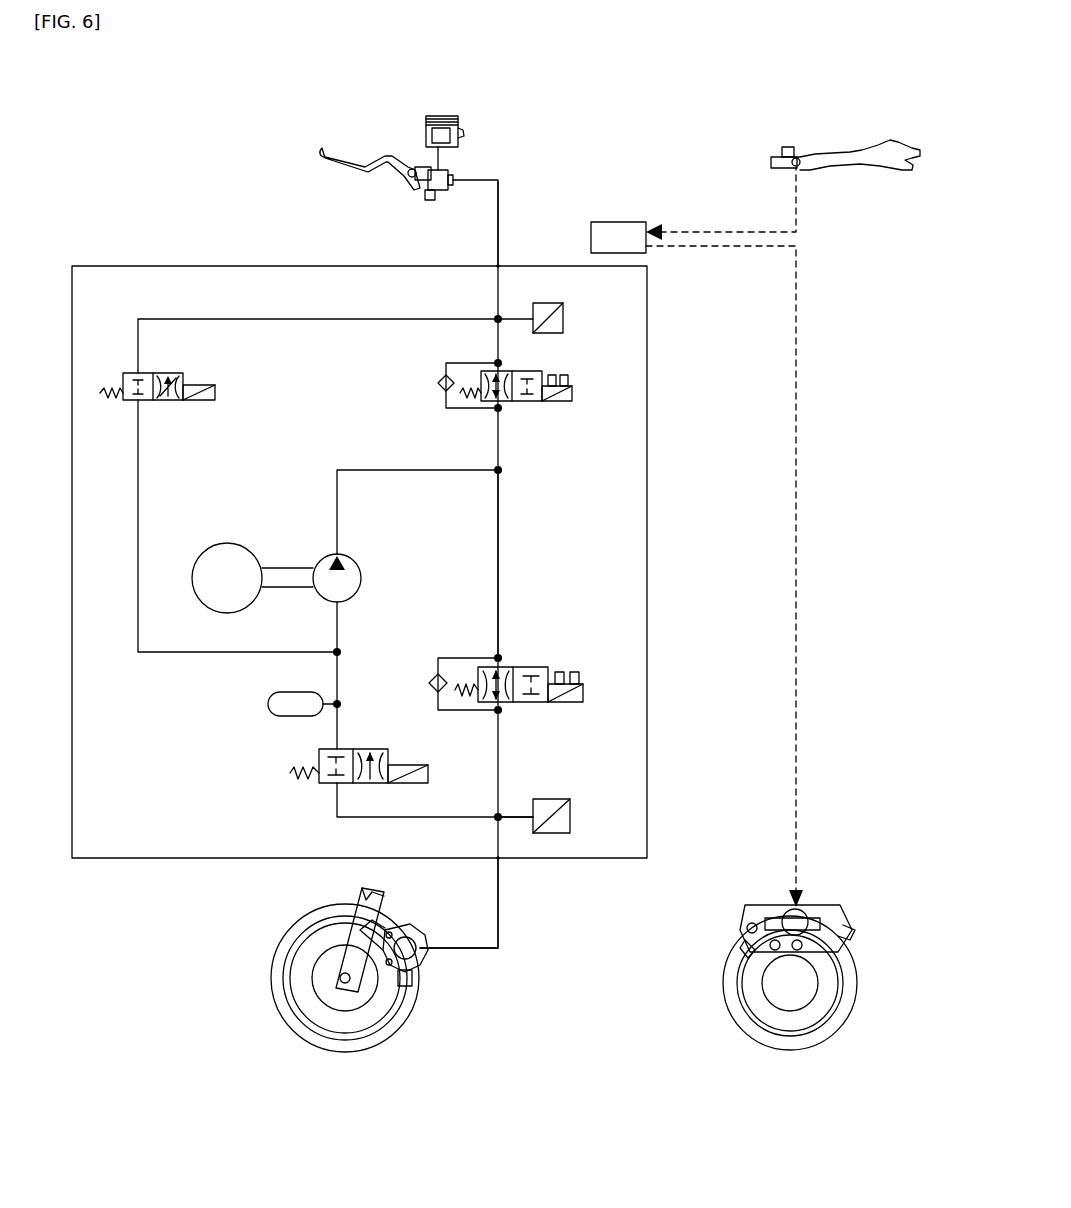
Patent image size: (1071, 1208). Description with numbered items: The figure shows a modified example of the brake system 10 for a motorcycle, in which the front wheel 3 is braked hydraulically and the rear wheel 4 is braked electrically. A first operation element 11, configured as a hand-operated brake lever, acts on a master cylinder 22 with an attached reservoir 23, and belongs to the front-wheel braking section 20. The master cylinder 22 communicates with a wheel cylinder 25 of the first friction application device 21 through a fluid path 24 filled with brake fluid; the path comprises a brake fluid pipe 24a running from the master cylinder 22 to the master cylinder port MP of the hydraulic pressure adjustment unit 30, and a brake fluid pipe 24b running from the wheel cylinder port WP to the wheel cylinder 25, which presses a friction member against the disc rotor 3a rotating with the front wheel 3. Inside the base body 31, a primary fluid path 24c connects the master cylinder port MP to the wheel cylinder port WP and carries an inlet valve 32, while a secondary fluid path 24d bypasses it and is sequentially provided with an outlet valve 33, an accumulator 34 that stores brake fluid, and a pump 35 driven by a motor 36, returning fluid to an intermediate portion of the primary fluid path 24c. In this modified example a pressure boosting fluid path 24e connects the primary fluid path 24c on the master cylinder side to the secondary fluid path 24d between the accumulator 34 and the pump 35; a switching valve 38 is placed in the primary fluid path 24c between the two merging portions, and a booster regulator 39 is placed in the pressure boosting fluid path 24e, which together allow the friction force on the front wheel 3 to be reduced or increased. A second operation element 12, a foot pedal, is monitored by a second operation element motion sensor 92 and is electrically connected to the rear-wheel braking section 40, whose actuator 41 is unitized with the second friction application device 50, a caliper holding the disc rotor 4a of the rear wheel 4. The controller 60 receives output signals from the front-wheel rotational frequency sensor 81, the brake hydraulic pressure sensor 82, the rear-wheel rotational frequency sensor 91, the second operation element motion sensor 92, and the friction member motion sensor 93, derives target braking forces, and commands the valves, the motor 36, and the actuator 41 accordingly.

The brake system 10 is at (240, 105).
The first operation element 11 is at (345, 149).
The second operation element 12 is at (880, 150).
The front-wheel braking section 20 is at (223, 182).
The first friction application device 21 is at (415, 975).
The master cylinder 22 is at (440, 193).
The reservoir 23 is at (470, 118).
The fluid path 24 is at (525, 175).
The brake fluid pipe 24a is at (499, 222).
The brake fluid pipe 24b is at (499, 922).
The primary fluid path 24c is at (499, 522).
The secondary fluid path 24d is at (336, 490).
The pressure boosting fluid path 24e is at (182, 655).
The wheel cylinder 25 is at (408, 944).
The hydraulic pressure adjustment unit 30 is at (140, 246).
The base body 31 is at (231, 265).
The inlet valve 32 is at (537, 703).
The outlet valve 33 is at (326, 785).
The accumulator 34 is at (286, 717).
The pump 35 is at (319, 560).
The motor 36 is at (206, 549).
The switching valve 38 is at (536, 403).
The booster regulator 39 is at (172, 403).
The rear-wheel braking section 40 is at (852, 776).
The actuator 41 is at (786, 910).
The second friction application device 50 is at (748, 908).
The controller 60 is at (630, 213).
The front-wheel rotational frequency sensor 81 is at (408, 988).
The brake hydraulic pressure sensor 82 is at (562, 333).
The rear-wheel rotational frequency sensor 91 is at (742, 946).
The second operation element motion sensor 92 is at (791, 146).
The friction member motion sensor 93 is at (822, 912).
The front wheel 3 is at (255, 1000).
The disc rotor 3a is at (288, 946).
The rear wheel 4 is at (870, 994).
The disc rotor 4a is at (852, 956).
The master cylinder port MP is at (499, 265).
The wheel cylinder port WP is at (499, 860).